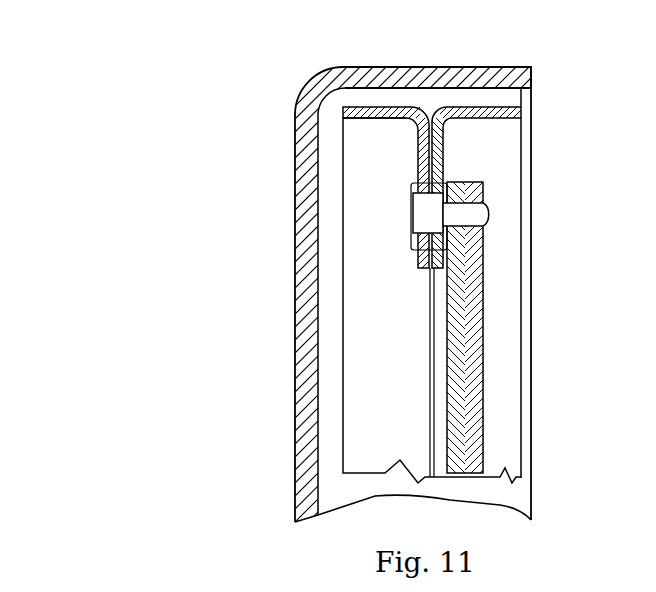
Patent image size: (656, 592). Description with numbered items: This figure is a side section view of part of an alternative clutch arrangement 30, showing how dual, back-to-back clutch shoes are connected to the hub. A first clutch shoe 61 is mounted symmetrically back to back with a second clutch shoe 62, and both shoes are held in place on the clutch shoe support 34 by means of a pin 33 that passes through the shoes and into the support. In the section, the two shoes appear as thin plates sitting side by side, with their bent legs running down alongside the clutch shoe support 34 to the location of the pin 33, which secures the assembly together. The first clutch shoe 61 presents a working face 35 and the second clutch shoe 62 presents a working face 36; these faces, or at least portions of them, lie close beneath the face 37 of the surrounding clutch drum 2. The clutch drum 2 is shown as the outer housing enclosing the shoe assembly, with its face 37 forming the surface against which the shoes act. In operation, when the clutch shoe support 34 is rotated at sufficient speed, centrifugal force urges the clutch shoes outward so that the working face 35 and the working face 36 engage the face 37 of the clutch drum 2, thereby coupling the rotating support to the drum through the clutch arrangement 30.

The clutch drum 2 is at (294, 343).
The alternative clutch arrangement 30 is at (165, 70).
The pin 33 is at (477, 213).
The clutch shoe support 34 is at (483, 333).
The working face 35 is at (370, 107).
The working face 36 is at (485, 80).
The face of clutch drum 37 is at (503, 90).
The first clutch shoe 61 is at (385, 120).
The second clutch shoe 62 is at (482, 120).